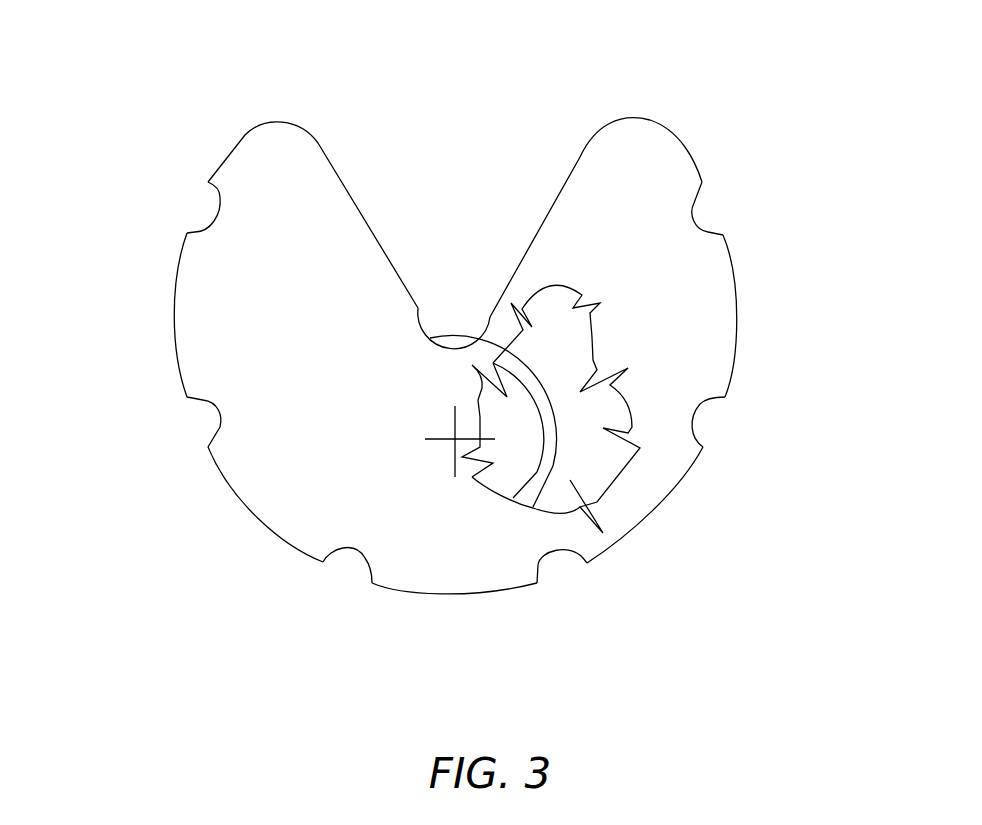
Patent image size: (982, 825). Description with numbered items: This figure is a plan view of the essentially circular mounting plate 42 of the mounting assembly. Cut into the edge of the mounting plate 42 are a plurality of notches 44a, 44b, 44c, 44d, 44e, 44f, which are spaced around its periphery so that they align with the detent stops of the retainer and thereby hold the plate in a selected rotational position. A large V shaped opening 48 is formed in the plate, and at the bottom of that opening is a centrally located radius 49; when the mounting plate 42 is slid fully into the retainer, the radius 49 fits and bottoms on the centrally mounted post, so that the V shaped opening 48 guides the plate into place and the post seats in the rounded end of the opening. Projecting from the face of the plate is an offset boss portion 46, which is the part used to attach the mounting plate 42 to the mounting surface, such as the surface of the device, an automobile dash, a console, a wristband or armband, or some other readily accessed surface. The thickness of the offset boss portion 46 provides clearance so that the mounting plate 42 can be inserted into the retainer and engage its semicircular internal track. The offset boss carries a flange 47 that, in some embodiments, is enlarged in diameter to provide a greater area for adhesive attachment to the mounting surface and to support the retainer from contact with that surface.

The mounting plate 42 is at (688, 153).
The notch 44a is at (693, 213).
The notch 44b is at (700, 412).
The notch 44c is at (558, 550).
The notch 44d is at (357, 553).
The notch 44e is at (213, 417).
The notch 44f is at (222, 220).
The offset boss portion 46 is at (577, 522).
The flange 47 is at (557, 453).
The V shaped opening 48 is at (363, 215).
The radius 49 is at (456, 350).